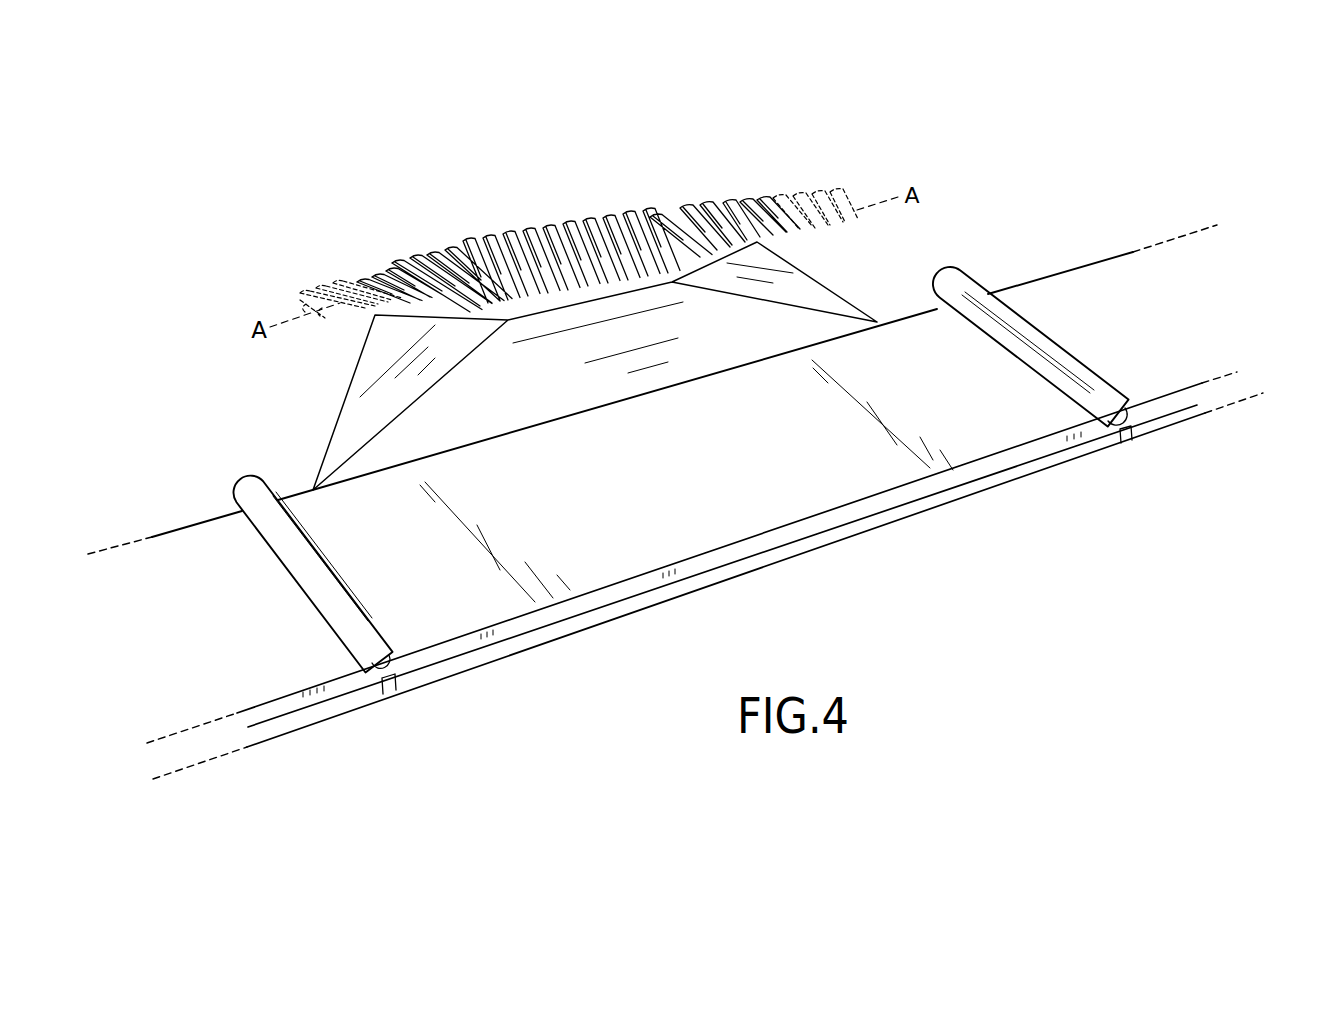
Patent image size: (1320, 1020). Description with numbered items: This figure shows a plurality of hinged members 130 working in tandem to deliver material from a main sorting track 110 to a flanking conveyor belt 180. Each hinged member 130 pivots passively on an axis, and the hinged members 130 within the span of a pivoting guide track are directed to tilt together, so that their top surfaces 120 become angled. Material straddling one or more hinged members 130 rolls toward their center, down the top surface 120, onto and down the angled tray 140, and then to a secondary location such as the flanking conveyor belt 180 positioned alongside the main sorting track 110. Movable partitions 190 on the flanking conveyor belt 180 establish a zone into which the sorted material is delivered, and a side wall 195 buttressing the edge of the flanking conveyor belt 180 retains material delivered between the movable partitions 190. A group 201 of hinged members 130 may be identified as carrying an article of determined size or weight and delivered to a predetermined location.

The main sorting track 110 is at (769, 193).
The top surface 120 is at (607, 213).
The hinged member 130 is at (636, 212).
The angled tray 140 is at (768, 320).
The flanking conveyor belt 180 is at (853, 497).
The movable partition 190 is at (312, 603).
The side wall 195 is at (450, 650).
The group of hinged members 201 is at (579, 190).